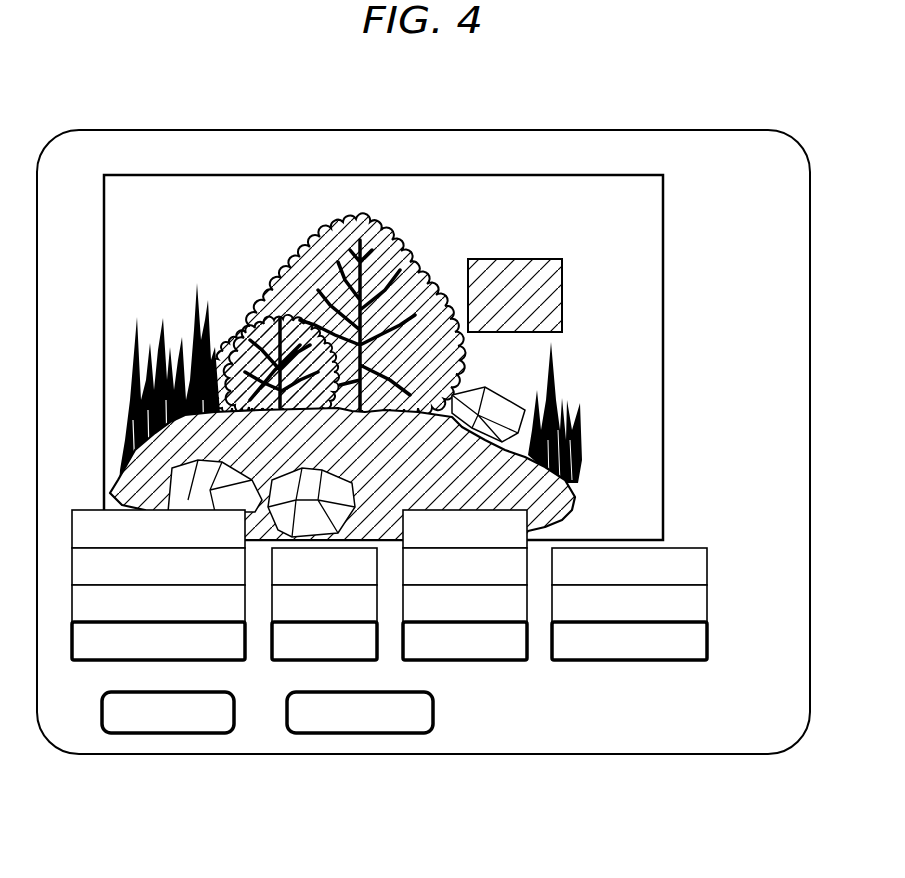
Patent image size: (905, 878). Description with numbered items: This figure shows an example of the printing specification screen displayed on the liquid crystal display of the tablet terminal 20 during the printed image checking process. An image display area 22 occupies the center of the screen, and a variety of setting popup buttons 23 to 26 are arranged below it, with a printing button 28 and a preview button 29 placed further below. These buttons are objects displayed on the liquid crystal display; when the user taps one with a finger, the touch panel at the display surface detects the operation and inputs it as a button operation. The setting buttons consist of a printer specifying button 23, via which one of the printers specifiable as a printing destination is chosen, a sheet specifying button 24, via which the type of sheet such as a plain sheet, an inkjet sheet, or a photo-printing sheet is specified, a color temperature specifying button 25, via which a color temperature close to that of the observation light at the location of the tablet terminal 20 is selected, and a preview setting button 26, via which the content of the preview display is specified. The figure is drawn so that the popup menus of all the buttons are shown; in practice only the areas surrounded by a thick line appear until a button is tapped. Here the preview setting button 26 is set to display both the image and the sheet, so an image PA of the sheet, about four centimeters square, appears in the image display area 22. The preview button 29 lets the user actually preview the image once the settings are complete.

The tablet terminal 20 is at (535, 754).
The image display area 22 is at (280, 175).
The printer specifying button 23 is at (92, 663).
The sheet specifying button 24 is at (282, 663).
The color temperature specifying button 25 is at (483, 662).
The preview setting button 26 is at (630, 663).
The printing button 28 is at (165, 735).
The preview button 29 is at (360, 735).
The image of the sheet PA is at (512, 258).